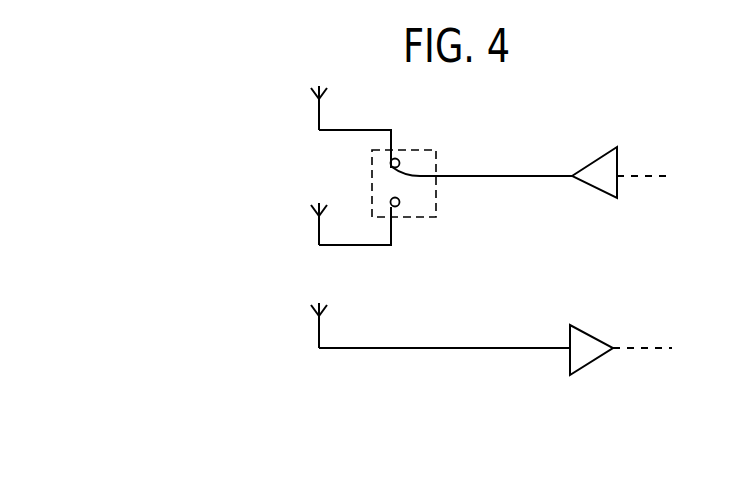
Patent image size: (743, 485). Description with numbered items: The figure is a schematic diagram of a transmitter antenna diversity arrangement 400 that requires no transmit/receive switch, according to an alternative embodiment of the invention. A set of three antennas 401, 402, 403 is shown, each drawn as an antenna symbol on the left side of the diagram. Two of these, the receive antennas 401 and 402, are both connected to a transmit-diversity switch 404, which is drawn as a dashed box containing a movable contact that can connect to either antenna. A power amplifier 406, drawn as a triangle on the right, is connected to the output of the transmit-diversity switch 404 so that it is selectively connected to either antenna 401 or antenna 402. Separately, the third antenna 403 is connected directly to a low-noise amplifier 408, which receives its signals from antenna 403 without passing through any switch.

The transmitter antenna diversity arrangement 400 is at (545, 94).
The receive antenna 401 is at (317, 113).
The receive antenna 402 is at (317, 228).
The antenna 403 is at (317, 328).
The transmit-diversity switch 404 is at (423, 150).
The power amplifier 406 is at (594, 190).
The low-noise amplifier 408 is at (568, 362).